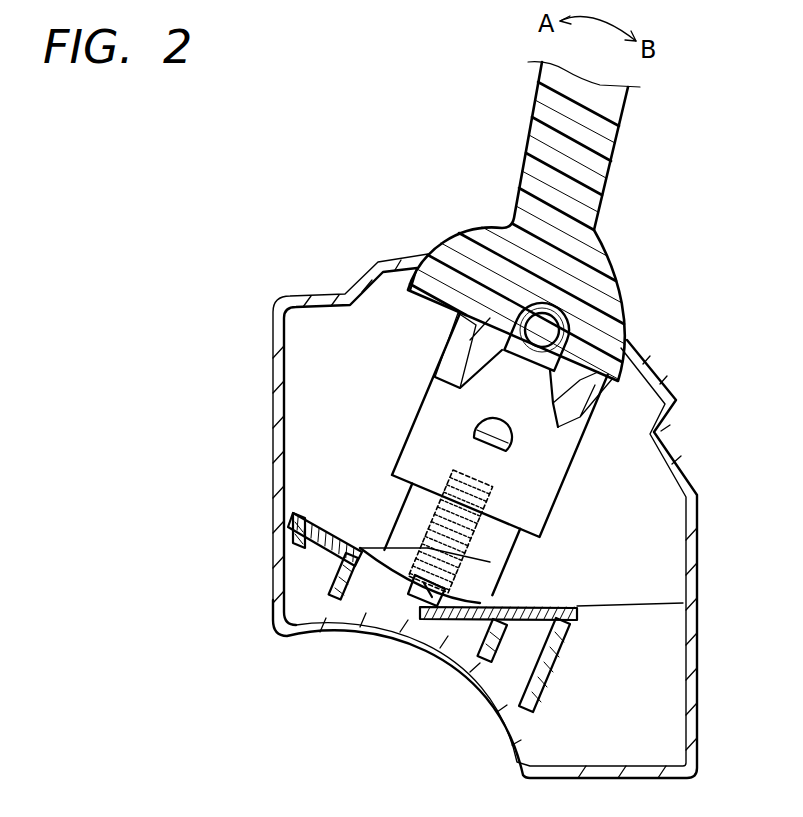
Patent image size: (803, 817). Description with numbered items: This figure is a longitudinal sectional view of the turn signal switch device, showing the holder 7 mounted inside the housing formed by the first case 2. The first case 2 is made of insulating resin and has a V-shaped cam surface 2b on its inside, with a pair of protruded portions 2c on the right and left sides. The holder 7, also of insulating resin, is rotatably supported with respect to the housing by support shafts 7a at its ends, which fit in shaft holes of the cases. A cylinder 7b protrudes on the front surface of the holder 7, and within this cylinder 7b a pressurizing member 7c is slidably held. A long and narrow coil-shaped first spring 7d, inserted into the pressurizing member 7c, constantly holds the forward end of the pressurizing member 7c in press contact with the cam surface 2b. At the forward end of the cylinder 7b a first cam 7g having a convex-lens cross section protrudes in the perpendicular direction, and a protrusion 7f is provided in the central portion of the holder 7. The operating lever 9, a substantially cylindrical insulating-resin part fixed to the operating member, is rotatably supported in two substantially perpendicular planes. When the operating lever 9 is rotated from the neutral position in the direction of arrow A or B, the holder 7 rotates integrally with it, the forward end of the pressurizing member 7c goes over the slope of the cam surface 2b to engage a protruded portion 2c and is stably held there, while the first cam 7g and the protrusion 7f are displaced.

The first case 2 is at (275, 358).
The V-shaped cam surface 2b is at (397, 573).
The protruded portion 2c is at (357, 553).
The holder 7 is at (548, 463).
The support shaft 7a is at (545, 323).
The cylinder 7b is at (517, 558).
The pressurizing member 7c is at (413, 590).
The first spring 7d is at (478, 495).
The protrusion 7f is at (490, 427).
The first cam 7g is at (388, 547).
The operating lever 9 is at (540, 160).